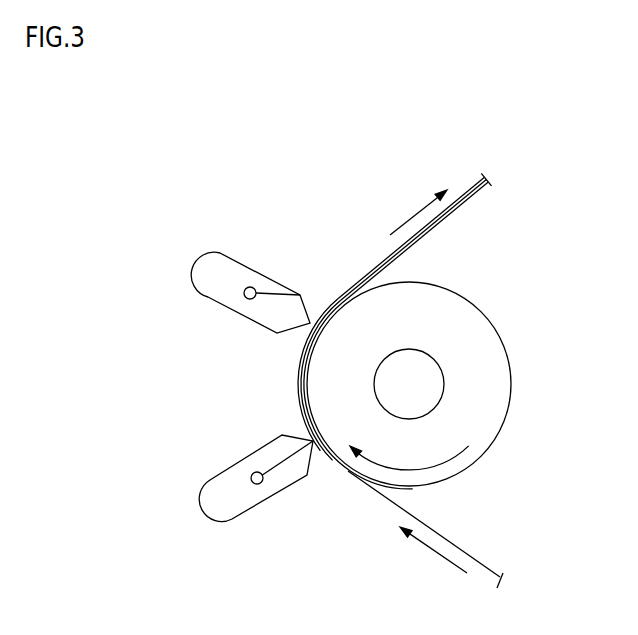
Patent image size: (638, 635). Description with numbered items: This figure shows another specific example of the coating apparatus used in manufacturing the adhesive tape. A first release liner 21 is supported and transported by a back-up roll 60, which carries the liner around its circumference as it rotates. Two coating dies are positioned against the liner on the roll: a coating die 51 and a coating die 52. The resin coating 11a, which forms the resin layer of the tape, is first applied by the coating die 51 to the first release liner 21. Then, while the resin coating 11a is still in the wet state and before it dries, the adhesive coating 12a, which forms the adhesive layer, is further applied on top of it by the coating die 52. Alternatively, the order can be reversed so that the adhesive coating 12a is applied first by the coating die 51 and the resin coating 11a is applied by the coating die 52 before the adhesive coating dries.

The back-up roll 60 is at (497, 373).
The adhesive coating 12a is at (378, 257).
The resin coating 11a is at (297, 385).
The first release liner 21 is at (391, 503).
The coating die 51 is at (253, 507).
The coating die 52 is at (242, 264).